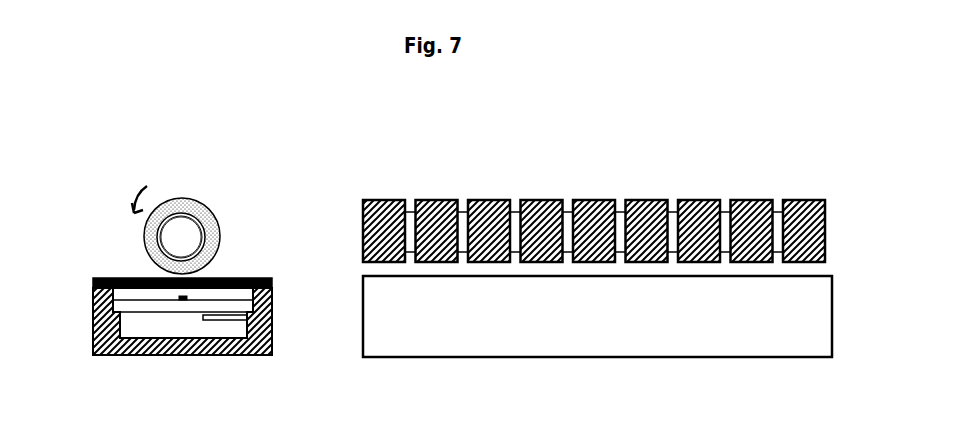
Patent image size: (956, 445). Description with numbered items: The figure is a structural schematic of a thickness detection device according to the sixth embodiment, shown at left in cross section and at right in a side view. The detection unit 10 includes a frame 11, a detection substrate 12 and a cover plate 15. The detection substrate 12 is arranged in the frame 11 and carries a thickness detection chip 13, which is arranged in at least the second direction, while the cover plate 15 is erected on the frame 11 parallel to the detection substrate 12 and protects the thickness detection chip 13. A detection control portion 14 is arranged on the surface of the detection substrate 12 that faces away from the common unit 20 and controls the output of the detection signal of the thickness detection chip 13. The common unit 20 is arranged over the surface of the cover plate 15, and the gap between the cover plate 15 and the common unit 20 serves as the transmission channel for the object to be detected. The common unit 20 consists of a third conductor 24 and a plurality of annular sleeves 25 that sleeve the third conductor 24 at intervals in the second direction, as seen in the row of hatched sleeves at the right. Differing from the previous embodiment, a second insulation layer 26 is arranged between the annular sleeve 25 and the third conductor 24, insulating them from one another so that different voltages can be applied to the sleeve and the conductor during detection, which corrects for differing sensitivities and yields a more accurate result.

The detection unit 10 is at (428, 326).
The frame 11 is at (102, 330).
The detection substrate 12 is at (238, 307).
The thickness detection chip 13 is at (183, 298).
The detection control portion 14 is at (243, 316).
The cover plate 15 is at (97, 279).
The common unit 20 is at (458, 197).
The third conductor 24 is at (193, 228).
The annular sleeve 25 is at (187, 198).
The second insulation layer 26 is at (143, 238).